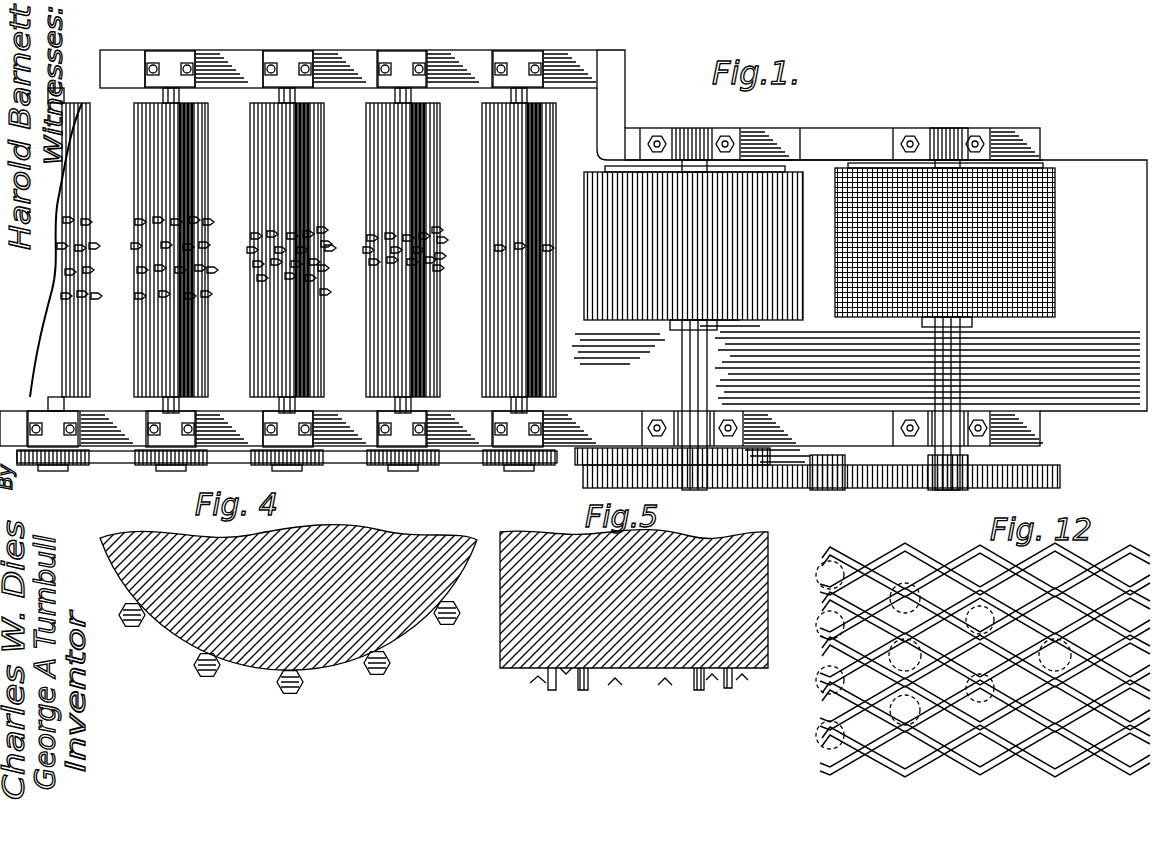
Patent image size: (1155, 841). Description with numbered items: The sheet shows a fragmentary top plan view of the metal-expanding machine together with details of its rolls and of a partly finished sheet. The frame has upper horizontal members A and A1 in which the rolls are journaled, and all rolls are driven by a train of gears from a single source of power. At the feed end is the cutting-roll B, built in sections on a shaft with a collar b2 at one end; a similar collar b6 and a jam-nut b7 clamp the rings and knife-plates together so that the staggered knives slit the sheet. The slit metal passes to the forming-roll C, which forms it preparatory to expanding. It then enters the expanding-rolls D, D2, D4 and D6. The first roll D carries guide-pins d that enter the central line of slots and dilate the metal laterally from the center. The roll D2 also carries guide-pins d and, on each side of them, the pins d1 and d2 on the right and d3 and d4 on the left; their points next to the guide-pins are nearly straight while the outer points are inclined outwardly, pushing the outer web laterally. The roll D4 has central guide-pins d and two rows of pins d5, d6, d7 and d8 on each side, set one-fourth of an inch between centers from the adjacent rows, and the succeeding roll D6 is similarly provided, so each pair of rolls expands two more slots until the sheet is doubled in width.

In FIG. 1, the upper expanding-roll D6 is at (203, 100).
In FIG. 1, the upper expanding-roll D4 is at (312, 100).
In FIG. 1, the upper expanding-roll D2 is at (437, 97).
In FIG. 1, the first upper expanding-roll D is at (553, 100).
In FIG. 4, the first upper expanding-roll D is at (288, 581).
In FIG. 1, the guide-pins d is at (497, 247).
In FIG. 4, the guide-pins d is at (418, 680).
In FIG. 1, the expanding-pin d1 is at (446, 238).
In FIG. 5, the expanding-pin d1 is at (700, 690).
In FIG. 1, the expanding-pin d2 is at (440, 228).
In FIG. 5, the expanding-pin d2 is at (730, 690).
In FIG. 1, the expanding-pin d3 is at (444, 257).
In FIG. 5, the expanding-pin d3 is at (586, 690).
In FIG. 1, the expanding-pin d4 is at (441, 270).
In FIG. 5, the expanding-pin d4 is at (552, 690).
In FIG. 1, the guide-pin d5 is at (330, 244).
In FIG. 1, the guide-pin d6 is at (326, 228).
In FIG. 1, the guide-pin d7 is at (326, 270).
In FIG. 1, the guide-pin d8 is at (328, 294).
In FIG. 1, the forming-roll C is at (788, 174).
In FIG. 1, the upper horizontal frame member A is at (870, 127).
In FIG. 1, the upper horizontal frame member A1 is at (824, 412).
In FIG. 1, the cutting-roll B is at (1055, 185).
In FIG. 1, the collar b2 is at (1014, 165).
In FIG. 1, the collar b6 is at (990, 322).
In FIG. 1, the jam-nut b7 is at (938, 166).